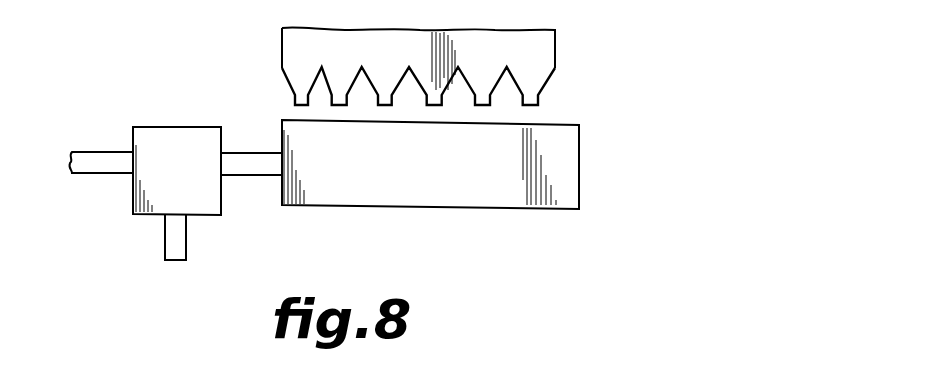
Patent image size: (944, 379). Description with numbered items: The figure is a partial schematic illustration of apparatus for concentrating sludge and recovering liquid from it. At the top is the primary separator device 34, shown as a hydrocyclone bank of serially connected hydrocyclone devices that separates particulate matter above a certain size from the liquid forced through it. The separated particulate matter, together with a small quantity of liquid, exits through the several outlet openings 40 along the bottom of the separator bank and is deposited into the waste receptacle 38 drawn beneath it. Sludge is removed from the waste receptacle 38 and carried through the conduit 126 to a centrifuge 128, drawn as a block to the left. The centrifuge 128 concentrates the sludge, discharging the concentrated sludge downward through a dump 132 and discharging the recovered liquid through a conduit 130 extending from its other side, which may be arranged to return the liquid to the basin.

The primary separator device 34 is at (556, 55).
The outlet openings 40 is at (540, 104).
The waste receptacle 38 is at (452, 208).
The centrifuge 128 is at (177, 125).
The conduit 130 is at (109, 177).
The conduit 126 is at (243, 178).
The dump 132 is at (165, 232).